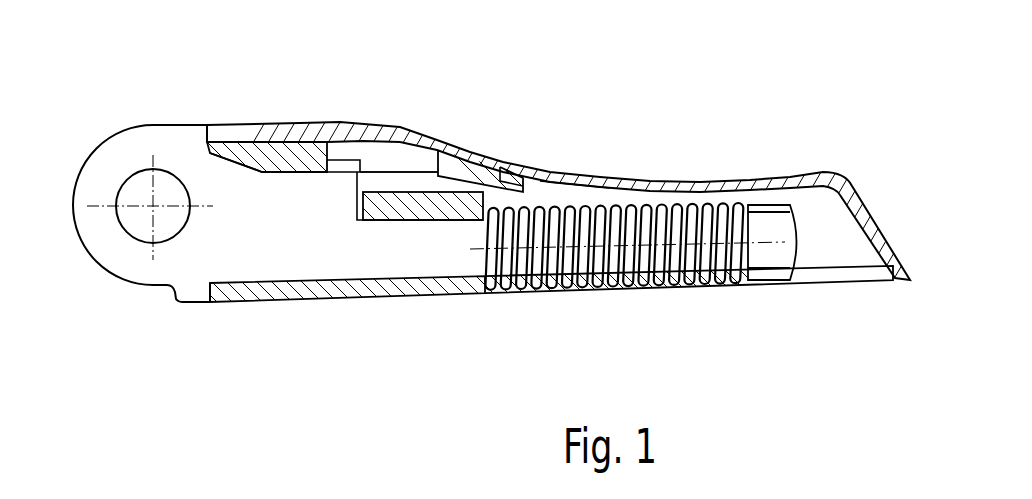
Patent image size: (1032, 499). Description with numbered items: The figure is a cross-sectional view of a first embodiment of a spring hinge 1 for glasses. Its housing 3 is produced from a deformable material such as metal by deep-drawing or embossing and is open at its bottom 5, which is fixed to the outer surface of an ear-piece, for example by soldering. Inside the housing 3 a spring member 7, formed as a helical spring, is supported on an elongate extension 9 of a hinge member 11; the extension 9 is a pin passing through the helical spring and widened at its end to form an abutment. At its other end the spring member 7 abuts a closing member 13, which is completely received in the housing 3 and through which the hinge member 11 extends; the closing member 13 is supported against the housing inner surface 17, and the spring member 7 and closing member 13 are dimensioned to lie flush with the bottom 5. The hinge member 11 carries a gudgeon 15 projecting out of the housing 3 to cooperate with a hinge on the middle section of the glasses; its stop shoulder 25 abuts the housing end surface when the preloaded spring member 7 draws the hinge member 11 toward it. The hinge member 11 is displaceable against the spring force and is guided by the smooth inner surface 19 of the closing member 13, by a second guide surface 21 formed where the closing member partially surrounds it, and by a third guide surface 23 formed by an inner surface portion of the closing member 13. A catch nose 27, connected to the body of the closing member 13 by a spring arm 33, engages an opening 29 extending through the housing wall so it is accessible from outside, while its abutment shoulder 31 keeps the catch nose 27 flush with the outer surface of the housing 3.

The spring hinge 1 is at (555, 125).
The housing 3 is at (700, 183).
The bottom 5 is at (773, 288).
The spring member 7 is at (520, 288).
The elongate extension 9 is at (773, 228).
The hinge member 11 is at (350, 258).
The closing member 13 is at (279, 150).
The gudgeon 15 is at (110, 172).
The housing inner surface 17 is at (353, 142).
The inner surface 19 is at (268, 283).
The second guide surface 21 is at (407, 225).
The third guide surface 23 is at (300, 172).
The stop shoulder 25 is at (203, 140).
The catch nose 27 is at (470, 160).
The opening 29 is at (520, 165).
The abutment shoulder 31 is at (565, 180).
The spring arm 33 is at (398, 168).